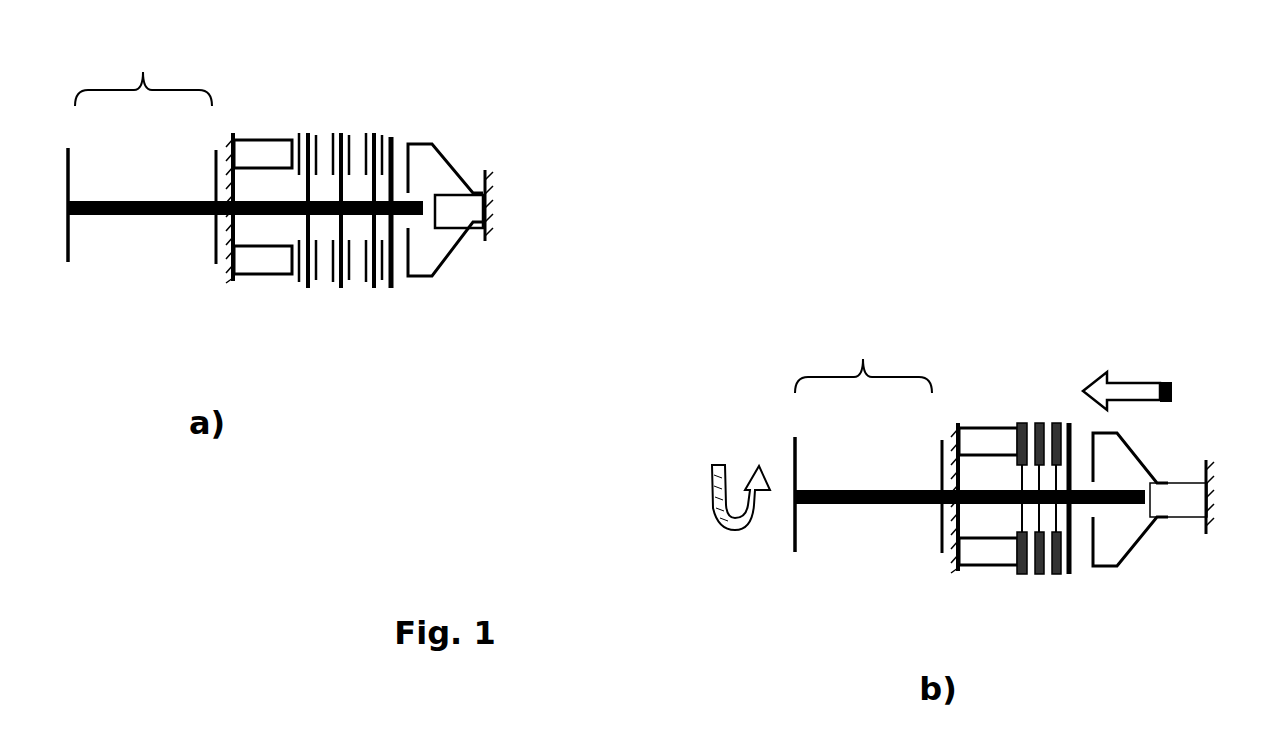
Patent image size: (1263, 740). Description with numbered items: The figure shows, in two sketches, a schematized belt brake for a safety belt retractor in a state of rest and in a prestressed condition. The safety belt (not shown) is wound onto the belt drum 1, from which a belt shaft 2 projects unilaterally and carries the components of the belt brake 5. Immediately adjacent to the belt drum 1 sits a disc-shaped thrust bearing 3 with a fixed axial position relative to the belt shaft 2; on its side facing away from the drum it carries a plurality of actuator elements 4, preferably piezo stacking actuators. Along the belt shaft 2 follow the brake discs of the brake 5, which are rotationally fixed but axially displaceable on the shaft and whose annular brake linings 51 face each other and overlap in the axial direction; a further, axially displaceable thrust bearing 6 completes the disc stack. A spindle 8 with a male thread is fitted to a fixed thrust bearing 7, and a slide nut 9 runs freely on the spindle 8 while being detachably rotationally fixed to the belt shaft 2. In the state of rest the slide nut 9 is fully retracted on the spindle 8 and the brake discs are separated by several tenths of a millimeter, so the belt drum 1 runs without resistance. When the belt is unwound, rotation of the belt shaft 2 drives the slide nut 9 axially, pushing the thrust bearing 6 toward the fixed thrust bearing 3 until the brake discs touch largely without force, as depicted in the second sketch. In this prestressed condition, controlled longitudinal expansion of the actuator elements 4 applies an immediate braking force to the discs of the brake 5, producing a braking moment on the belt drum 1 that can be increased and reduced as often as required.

In FIG. 1a, the belt drum 1 is at (143, 58).
In FIG. 1b, the belt drum 1 is at (863, 343).
In FIG. 1a, the belt shaft 2 is at (190, 216).
In FIG. 1b, the belt shaft 2 is at (918, 505).
In FIG. 1a, the thrust bearing 3 is at (234, 135).
In FIG. 1b, the thrust bearing 3 is at (958, 421).
In FIG. 1a, the actuator elements 4 is at (278, 139).
In FIG. 1b, the actuator elements 4 is at (990, 433).
In FIG. 1a, the belt brake 5 is at (336, 189).
In FIG. 1b, the belt brake 5 is at (1053, 472).
In FIG. 1a, the brake linings 51 is at (363, 264).
In FIG. 1a, the further thrust bearing 6 is at (393, 137).
In FIG. 1b, the further thrust bearing 6 is at (1071, 467).
In FIG. 1a, the fixed thrust bearing 7 is at (488, 240).
In FIG. 1a, the spindle 8 is at (465, 215).
In FIG. 1b, the spindle 8 is at (1185, 505).
In FIG. 1a, the slide nut 9 is at (444, 163).
In FIG. 1b, the slide nut 9 is at (1143, 463).